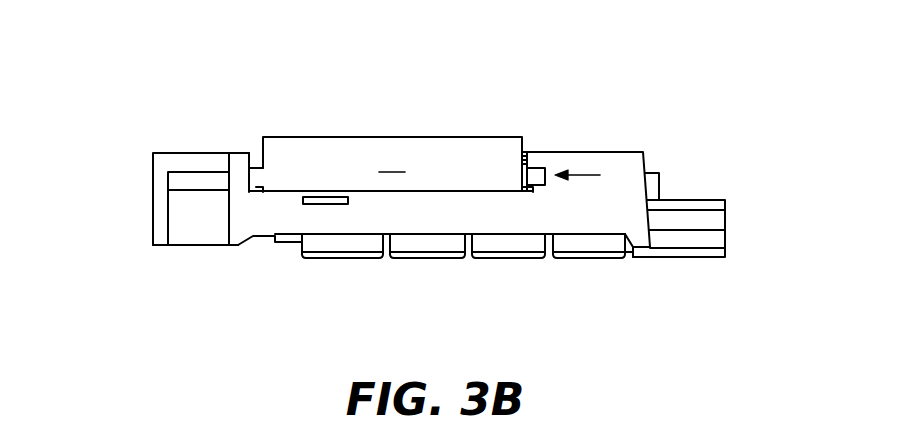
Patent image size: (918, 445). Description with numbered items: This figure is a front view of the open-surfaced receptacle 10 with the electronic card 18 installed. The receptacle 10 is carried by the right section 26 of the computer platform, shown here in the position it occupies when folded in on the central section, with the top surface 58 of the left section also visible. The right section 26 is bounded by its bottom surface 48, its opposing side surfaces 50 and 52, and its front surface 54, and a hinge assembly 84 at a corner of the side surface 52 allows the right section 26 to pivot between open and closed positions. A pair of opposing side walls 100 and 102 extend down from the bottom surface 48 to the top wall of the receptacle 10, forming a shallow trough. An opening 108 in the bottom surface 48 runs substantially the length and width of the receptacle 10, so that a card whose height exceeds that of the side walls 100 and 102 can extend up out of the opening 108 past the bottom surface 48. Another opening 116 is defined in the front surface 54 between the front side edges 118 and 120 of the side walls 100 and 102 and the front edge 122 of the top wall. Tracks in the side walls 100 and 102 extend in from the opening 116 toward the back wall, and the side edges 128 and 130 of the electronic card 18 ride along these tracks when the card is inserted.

The open-surfaced receptacle 10 is at (594, 176).
The electronic card 18 is at (392, 161).
The right section 26 is at (640, 128).
The bottom surface 48 is at (233, 245).
The side surface 50 is at (160, 202).
The side surface 52 is at (722, 203).
The front surface 54 is at (562, 218).
The top surface 58 is at (188, 162).
The hinge assembly 84 is at (642, 243).
The side wall 100 is at (534, 157).
The side wall 102 is at (253, 191).
The opening 108 is at (531, 140).
The opening 116 is at (353, 128).
The front side edge 118 is at (533, 192).
The front side edge 120 is at (249, 152).
The front edge 122 is at (413, 191).
The side edge 128 is at (530, 183).
The side edge 130 is at (253, 180).